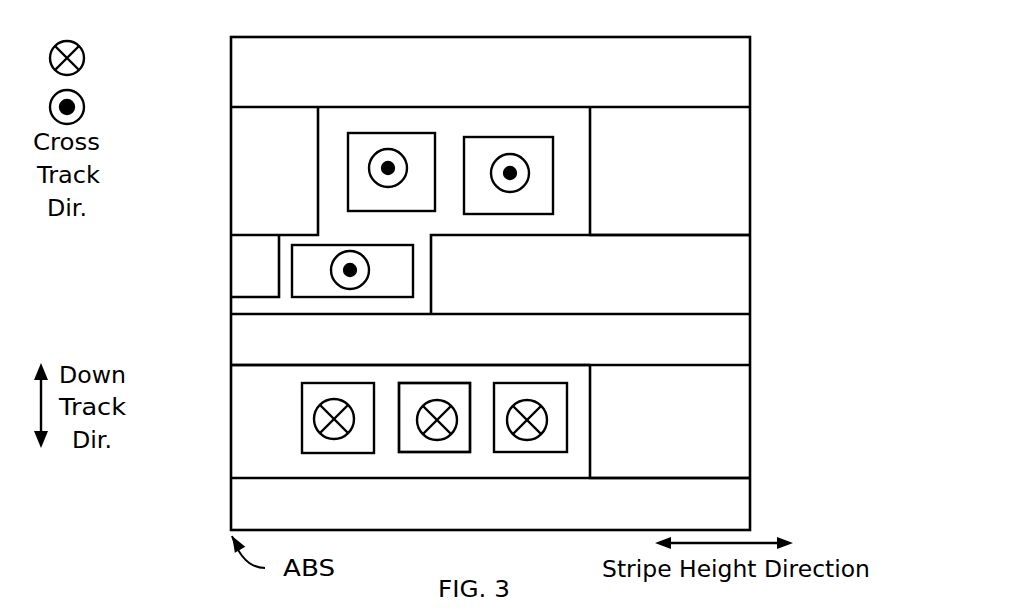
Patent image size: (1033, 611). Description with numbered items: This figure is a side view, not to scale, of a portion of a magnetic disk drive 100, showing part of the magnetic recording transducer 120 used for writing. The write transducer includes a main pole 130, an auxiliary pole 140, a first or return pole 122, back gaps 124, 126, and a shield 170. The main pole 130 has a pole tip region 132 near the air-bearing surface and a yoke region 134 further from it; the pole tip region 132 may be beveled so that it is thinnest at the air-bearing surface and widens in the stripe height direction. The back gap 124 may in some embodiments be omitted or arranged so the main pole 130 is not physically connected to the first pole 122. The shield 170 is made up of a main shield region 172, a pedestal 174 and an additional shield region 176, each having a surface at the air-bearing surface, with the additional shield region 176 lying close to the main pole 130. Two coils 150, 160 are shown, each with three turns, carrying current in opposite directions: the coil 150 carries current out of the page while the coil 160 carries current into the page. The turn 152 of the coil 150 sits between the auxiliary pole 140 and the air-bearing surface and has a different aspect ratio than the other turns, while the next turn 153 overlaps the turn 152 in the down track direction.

The magnetic disk drive 100 is at (423, 269).
The magnetic recording transducer 120 is at (192, 34).
The first or return pole 122 is at (490, 498).
The back gap 124 is at (670, 421).
The back gap 126 is at (670, 171).
The main pole 130 is at (490, 339).
The pole tip region 132 is at (258, 373).
The yoke region 134 is at (457, 375).
The auxiliary pole 140 is at (590, 274).
The coil 150 is at (562, 175).
The turn 152 is at (317, 297).
The turn 153 is at (368, 132).
The coil 160 is at (265, 435).
The shield 170 is at (777, 90).
The main shield region 172 is at (490, 83).
The pedestal 174 is at (274, 171).
The additional shield region 176 is at (230, 262).